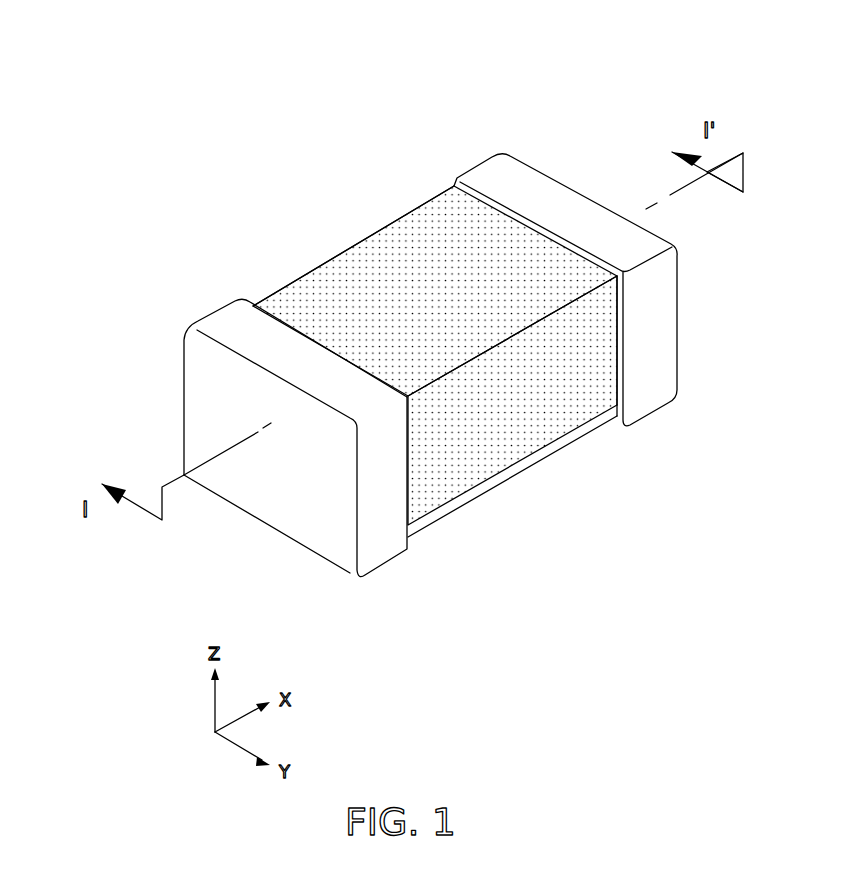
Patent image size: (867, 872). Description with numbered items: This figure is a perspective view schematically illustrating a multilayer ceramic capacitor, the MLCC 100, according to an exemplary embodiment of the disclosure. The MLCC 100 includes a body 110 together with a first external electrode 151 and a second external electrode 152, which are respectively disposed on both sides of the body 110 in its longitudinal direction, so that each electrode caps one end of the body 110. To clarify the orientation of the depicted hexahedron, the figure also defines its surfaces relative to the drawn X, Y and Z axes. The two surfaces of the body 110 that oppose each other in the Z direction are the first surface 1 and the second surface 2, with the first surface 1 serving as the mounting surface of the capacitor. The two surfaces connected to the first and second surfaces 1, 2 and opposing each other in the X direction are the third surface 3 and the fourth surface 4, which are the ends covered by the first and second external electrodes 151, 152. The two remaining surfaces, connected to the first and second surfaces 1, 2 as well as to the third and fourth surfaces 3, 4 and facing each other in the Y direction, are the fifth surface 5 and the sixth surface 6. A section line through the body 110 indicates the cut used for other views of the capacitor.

The multilayer ceramic capacitor 100 is at (413, 21).
The body 110 is at (298, 287).
The first external electrode 151 is at (227, 320).
The second external electrode 152 is at (487, 168).
The first surface 1 is at (434, 494).
The second surface 2 is at (509, 250).
The third surface 3 is at (268, 486).
The fourth surface 4 is at (626, 241).
The fifth surface 5 is at (558, 412).
The sixth surface 6 is at (436, 239).